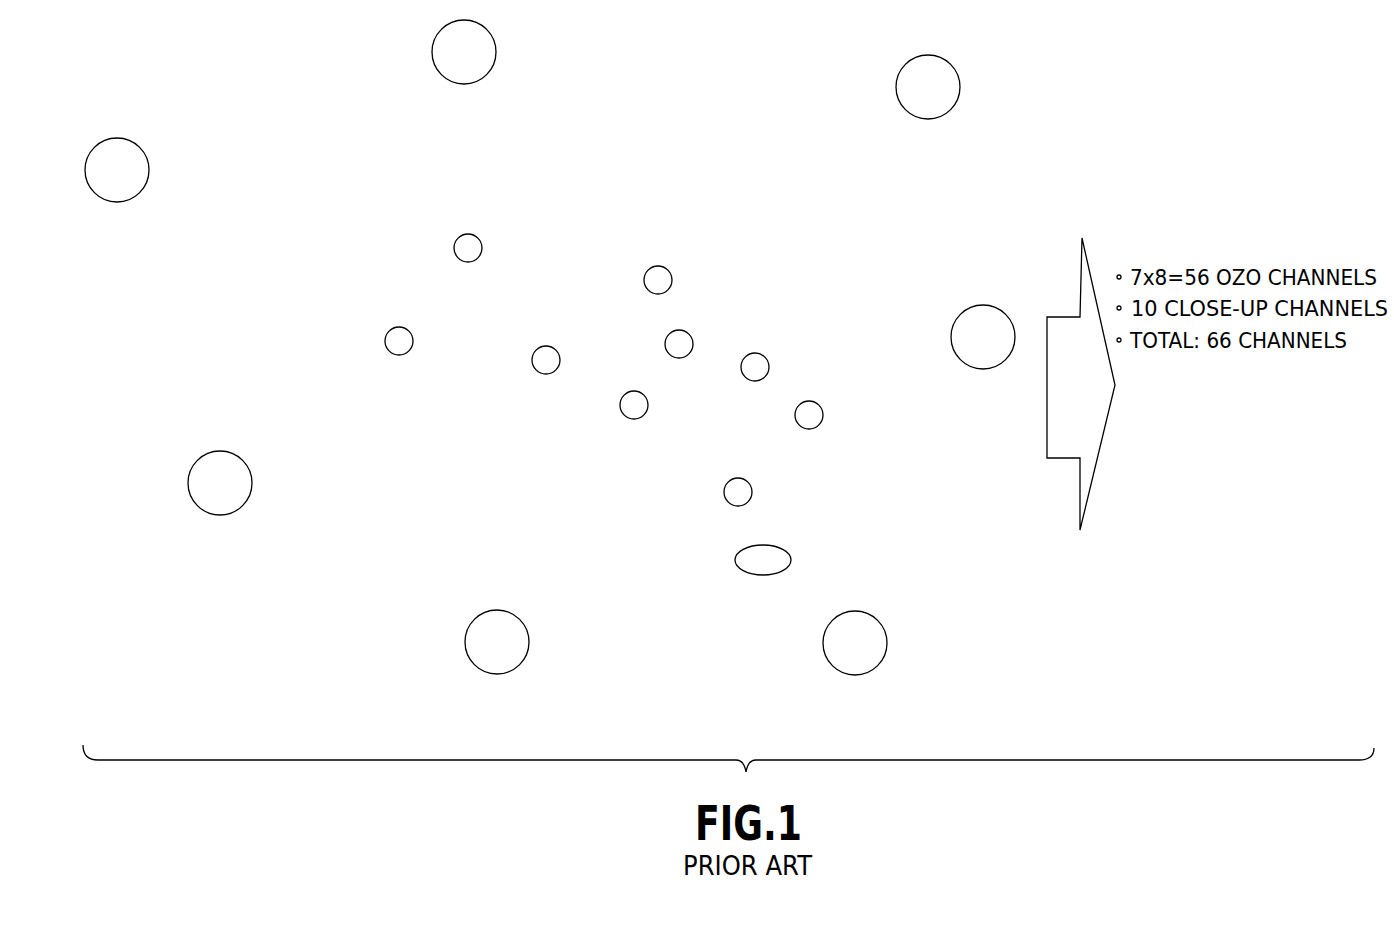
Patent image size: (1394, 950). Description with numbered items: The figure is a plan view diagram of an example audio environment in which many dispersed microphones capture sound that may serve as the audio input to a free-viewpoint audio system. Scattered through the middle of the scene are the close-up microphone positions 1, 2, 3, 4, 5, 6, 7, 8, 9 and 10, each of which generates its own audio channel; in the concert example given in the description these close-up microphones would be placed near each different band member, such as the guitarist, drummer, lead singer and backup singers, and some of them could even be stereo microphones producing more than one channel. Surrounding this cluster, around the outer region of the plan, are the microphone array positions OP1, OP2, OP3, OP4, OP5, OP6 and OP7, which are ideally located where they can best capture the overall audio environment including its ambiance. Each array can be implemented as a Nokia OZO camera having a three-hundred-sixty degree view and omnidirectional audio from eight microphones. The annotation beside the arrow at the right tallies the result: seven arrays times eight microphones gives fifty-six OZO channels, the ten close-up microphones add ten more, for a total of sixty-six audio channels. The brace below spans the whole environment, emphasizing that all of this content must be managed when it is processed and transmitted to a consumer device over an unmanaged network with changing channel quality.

The close-up microphone position 1 is at (468, 248).
The close-up microphone position 2 is at (546, 360).
The close-up microphone position 3 is at (679, 344).
The close-up microphone position 4 is at (755, 367).
The close-up microphone position 5 is at (658, 280).
The close-up microphone position 6 is at (738, 492).
The close-up microphone position 7 is at (809, 415).
The close-up microphone position 8 is at (399, 341).
The close-up microphone position 9 is at (634, 405).
The close-up microphone position 10 is at (763, 560).
The microphone array position OP1 is at (855, 643).
The microphone array position OP2 is at (983, 337).
The microphone array position OP3 is at (464, 52).
The microphone array position OP4 is at (928, 87).
The microphone array position OP5 is at (497, 642).
The microphone array position OP6 is at (117, 170).
The microphone array position OP7 is at (220, 483).